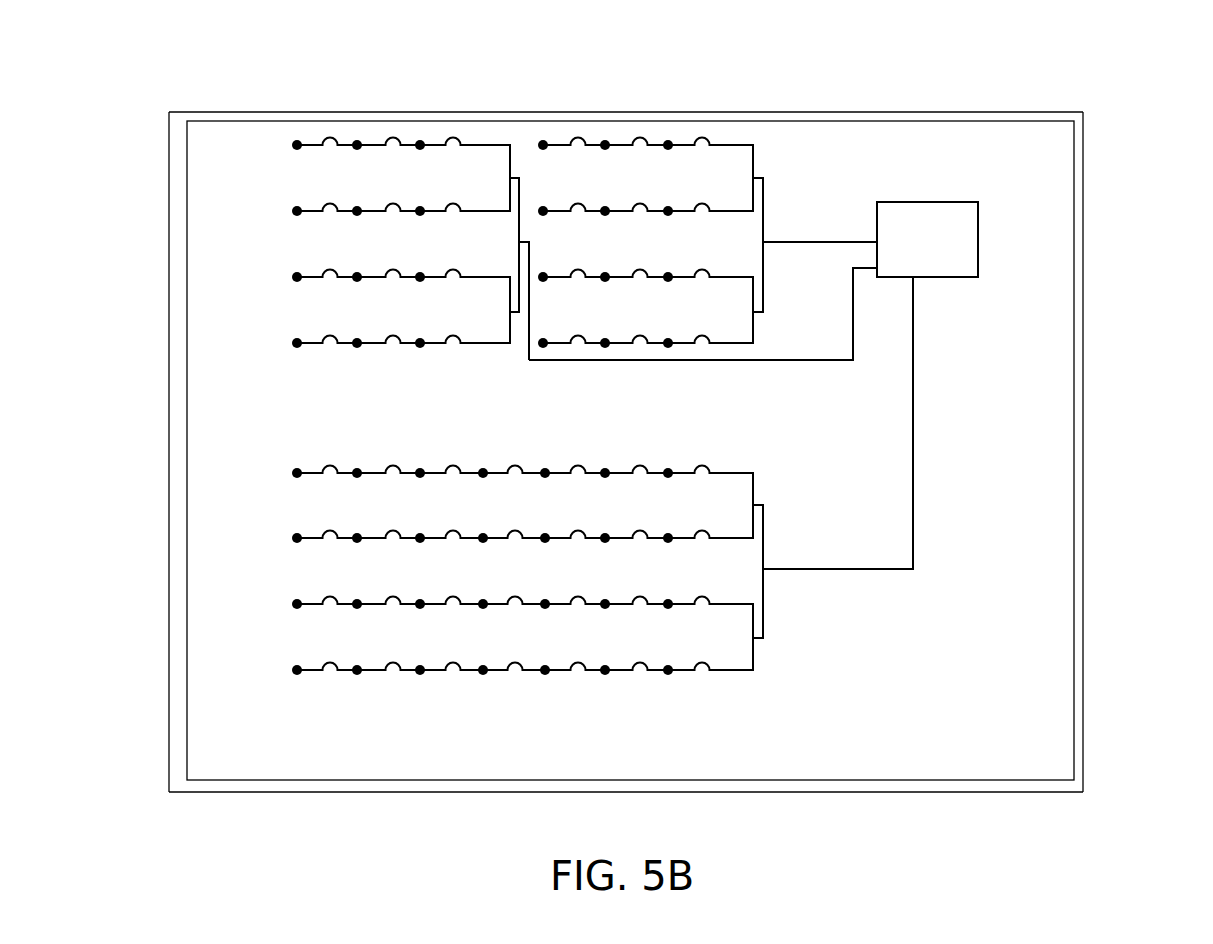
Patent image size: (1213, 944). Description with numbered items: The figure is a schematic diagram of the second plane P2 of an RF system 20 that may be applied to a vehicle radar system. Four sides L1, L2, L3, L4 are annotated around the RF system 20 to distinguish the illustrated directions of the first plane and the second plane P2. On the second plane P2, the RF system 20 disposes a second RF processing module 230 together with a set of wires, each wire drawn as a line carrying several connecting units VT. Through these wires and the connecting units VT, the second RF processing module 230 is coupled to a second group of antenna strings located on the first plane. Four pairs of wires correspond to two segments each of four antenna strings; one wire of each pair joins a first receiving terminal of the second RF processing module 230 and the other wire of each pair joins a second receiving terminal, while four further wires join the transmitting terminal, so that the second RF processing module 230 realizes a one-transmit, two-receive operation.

The RF system 20 is at (1070, 88).
The second RF processing module 230 is at (906, 254).
The second plane P2 is at (968, 160).
The side L1 is at (1106, 452).
The side L2 is at (626, 814).
The side L3 is at (146, 452).
The side L4 is at (626, 76).
The connecting unit VT is at (296, 140).